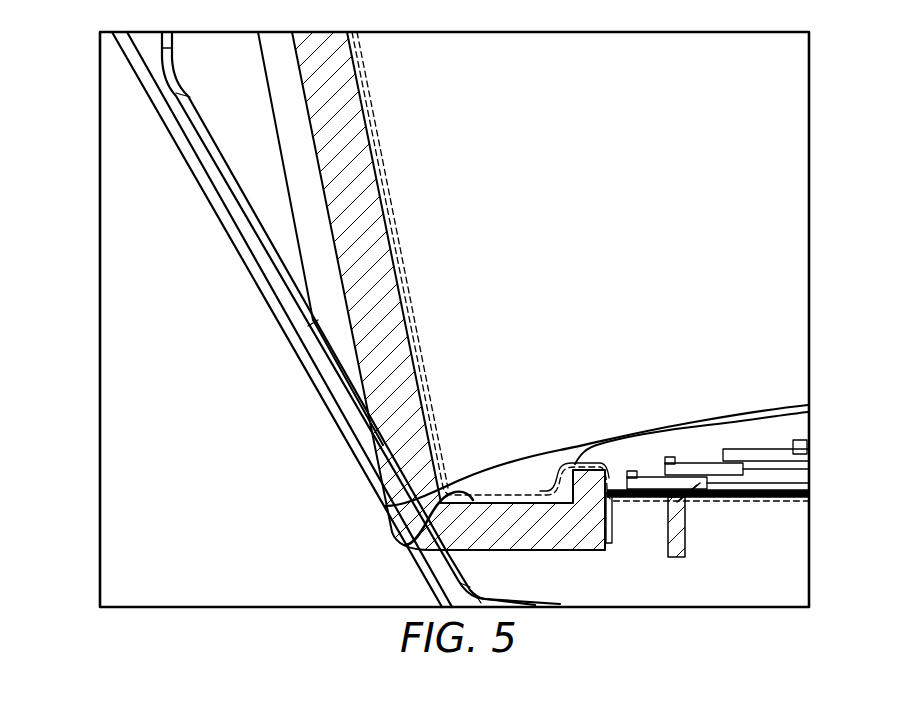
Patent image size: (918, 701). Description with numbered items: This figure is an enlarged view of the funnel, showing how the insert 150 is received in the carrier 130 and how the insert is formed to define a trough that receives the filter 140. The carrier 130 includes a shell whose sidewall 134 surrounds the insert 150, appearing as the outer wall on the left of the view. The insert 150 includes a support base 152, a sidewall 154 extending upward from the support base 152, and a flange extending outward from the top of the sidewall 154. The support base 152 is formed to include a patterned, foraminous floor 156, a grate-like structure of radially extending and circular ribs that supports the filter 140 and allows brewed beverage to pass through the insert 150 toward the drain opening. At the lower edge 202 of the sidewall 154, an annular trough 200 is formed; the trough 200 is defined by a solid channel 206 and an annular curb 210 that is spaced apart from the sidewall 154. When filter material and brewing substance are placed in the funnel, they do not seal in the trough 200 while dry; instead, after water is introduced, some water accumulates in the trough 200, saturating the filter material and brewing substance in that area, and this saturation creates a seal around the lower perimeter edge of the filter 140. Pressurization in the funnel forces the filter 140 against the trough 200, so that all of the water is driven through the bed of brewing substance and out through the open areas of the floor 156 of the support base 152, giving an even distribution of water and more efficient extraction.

The carrier 130 is at (207, 268).
The sidewall 134 is at (257, 273).
The insert 150 is at (286, 149).
The sidewall 154 is at (350, 123).
The filter 140 is at (400, 240).
The annular trough 200 is at (507, 488).
The lower edge 202 is at (385, 506).
The solid channel 206 is at (405, 545).
The annular curb 210 is at (592, 463).
The foraminous floor 156 is at (697, 467).
The support base 152 is at (771, 447).